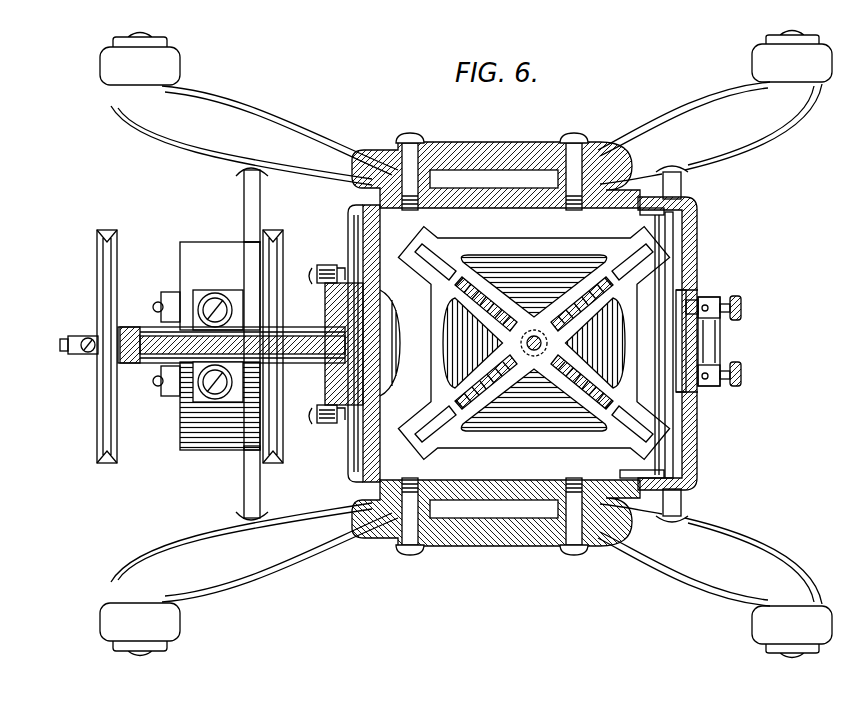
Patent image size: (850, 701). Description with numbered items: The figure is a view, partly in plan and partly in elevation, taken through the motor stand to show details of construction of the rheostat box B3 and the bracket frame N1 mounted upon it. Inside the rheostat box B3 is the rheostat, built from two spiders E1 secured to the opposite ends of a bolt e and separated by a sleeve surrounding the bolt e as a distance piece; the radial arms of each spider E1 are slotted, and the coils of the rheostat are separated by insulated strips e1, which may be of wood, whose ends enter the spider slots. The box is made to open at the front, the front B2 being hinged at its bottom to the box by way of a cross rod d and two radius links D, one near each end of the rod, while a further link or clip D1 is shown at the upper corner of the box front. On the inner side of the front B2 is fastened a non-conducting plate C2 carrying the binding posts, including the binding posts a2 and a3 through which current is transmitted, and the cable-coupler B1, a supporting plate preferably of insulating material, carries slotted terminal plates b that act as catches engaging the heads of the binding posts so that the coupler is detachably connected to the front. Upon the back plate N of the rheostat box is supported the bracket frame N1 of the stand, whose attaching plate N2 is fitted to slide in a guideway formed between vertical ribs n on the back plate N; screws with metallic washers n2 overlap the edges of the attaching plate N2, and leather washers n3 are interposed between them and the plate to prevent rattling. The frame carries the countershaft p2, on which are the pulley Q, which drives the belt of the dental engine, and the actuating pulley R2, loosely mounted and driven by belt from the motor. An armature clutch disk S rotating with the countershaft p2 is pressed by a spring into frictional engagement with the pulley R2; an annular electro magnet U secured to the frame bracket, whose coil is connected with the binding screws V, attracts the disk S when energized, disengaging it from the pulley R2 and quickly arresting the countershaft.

The pulley Q is at (96, 291).
The countershaft p2 is at (60, 346).
The bracket frame N1 is at (148, 327).
The binding screws V is at (170, 402).
The annular electro magnet U is at (220, 346).
The armature clutch disk S is at (250, 258).
The actuating pulley R2 is at (284, 250).
The vertical rib n is at (343, 268).
The metallic washers n2 is at (317, 272).
The leather washers n3 is at (318, 349).
The attaching plate N2 is at (330, 322).
The back plate N is at (388, 343).
The rheostat box B3 is at (534, 322).
The upper clip D1 is at (640, 212).
The radius links D is at (628, 472).
The cross rod d is at (668, 234).
The front of the rheostat box B2 is at (692, 258).
The terminal plates b is at (704, 310).
The binding post a3 is at (741, 308).
The binding post a2 is at (741, 377).
The non-conducting plate C2 is at (686, 343).
The cable-coupler B1 is at (708, 387).
The spider E1 is at (533, 336).
The bolt e is at (534, 335).
The insulated strips e1 is at (534, 343).